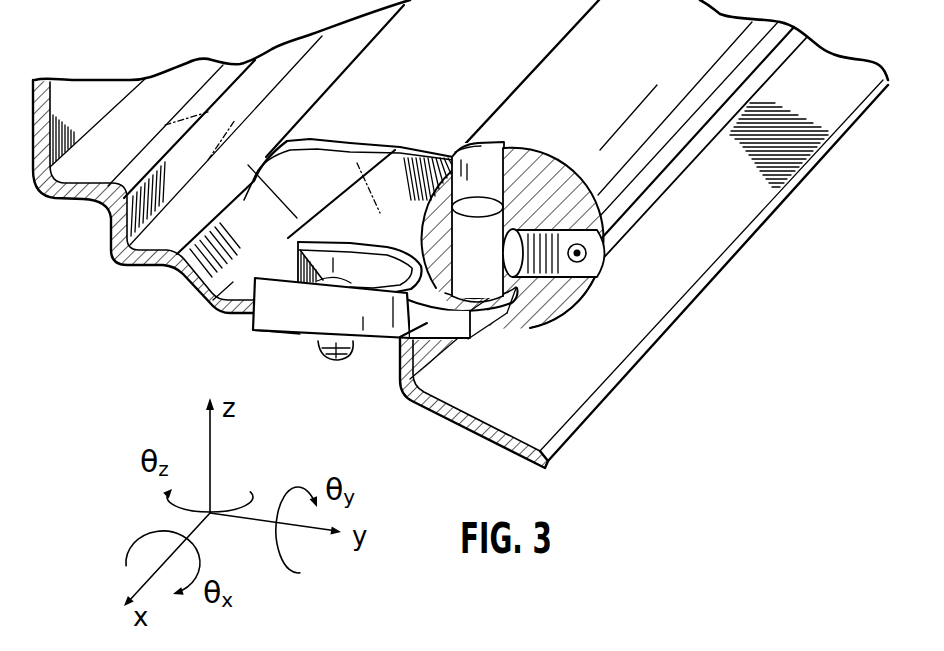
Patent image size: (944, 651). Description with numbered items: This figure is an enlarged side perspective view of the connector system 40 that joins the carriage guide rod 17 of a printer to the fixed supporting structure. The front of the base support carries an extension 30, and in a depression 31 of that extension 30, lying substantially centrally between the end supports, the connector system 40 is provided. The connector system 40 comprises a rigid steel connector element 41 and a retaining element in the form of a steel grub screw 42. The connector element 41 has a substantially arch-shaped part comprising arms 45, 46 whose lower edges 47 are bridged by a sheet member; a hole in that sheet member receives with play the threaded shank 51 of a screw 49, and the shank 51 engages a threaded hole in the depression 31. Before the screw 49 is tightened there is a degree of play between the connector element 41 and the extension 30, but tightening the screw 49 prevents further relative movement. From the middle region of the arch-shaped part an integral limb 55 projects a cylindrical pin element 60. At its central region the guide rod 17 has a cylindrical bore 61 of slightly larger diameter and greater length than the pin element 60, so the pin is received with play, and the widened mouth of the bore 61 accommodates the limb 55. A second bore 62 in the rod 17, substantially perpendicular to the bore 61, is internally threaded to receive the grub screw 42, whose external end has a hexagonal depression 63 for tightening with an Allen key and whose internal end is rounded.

The extension 30 is at (440, 73).
The depression 31 is at (337, 163).
The guide rod 17 is at (648, 190).
The connector system 40 is at (488, 351).
The connector element 41 is at (460, 328).
The grub screw 42 is at (528, 312).
The arm 45 is at (284, 318).
The arm 46 is at (350, 260).
The lower edges 47 is at (262, 331).
The screw 49 is at (307, 268).
The threaded shank 51 is at (333, 350).
The limb 55 is at (400, 337).
The pin element 60 is at (486, 254).
The cylindrical bore 61 is at (470, 165).
The second bore 62 is at (592, 222).
The hexagonal depression 63 is at (580, 280).